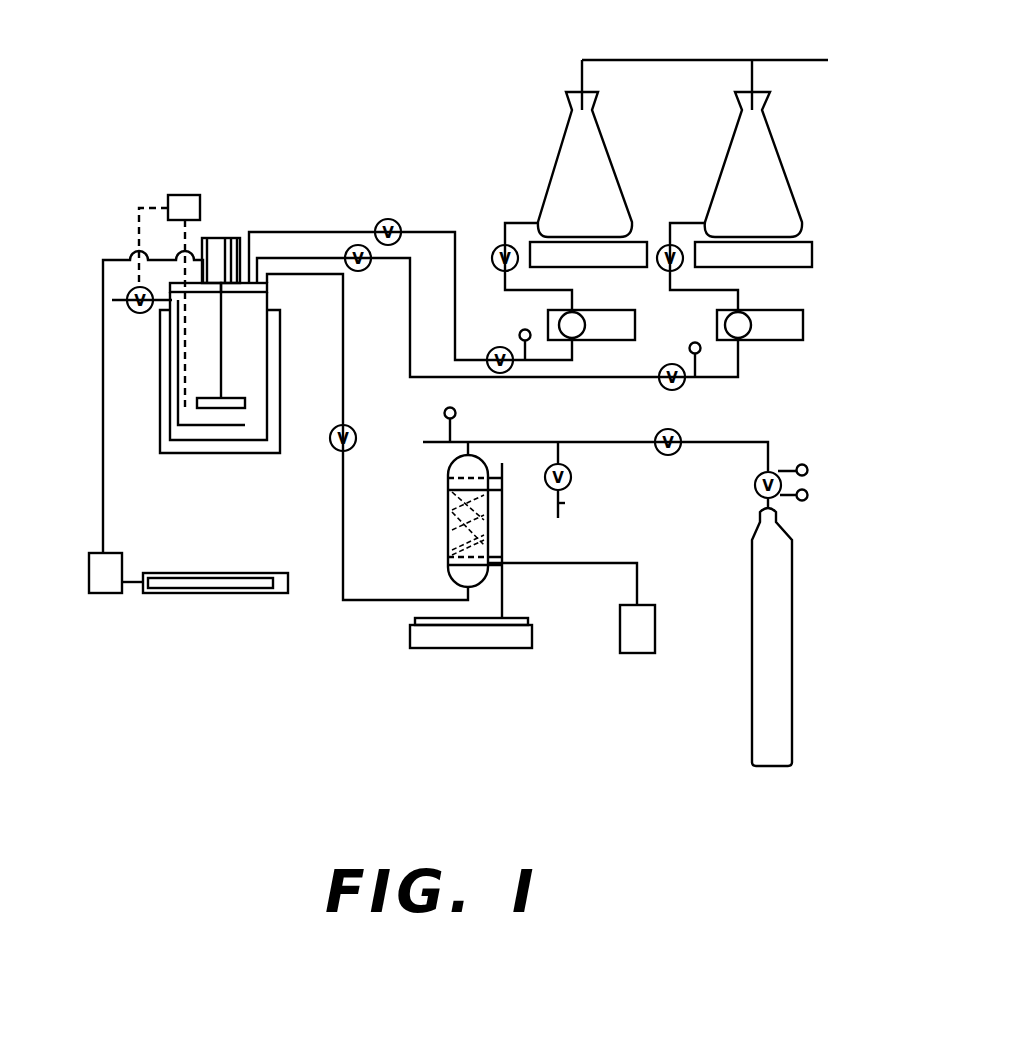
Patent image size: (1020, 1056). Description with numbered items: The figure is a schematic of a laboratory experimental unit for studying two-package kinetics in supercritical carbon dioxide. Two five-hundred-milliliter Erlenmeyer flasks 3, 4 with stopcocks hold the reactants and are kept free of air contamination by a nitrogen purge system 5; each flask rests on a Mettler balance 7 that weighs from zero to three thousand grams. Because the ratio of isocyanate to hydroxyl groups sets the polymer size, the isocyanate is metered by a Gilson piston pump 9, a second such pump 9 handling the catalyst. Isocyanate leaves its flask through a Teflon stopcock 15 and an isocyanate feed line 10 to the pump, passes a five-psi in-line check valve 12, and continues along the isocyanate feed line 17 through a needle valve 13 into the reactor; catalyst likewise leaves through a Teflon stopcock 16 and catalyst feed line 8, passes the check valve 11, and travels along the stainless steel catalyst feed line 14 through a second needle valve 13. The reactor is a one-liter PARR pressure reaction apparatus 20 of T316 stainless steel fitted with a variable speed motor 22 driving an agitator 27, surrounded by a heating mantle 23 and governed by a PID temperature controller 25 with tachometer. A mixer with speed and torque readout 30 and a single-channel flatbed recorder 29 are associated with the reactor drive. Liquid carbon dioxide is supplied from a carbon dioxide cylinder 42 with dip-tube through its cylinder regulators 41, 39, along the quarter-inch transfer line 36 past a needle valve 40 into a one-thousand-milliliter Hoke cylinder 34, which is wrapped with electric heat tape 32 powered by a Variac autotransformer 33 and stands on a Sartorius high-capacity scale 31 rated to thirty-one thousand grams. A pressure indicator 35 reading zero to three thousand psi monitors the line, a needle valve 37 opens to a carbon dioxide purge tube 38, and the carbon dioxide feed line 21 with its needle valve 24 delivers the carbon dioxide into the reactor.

The Erlenmeyer flask 3 is at (560, 165).
The Erlenmeyer flask 4 is at (775, 170).
The nitrogen purge system 5 is at (652, 60).
The balance 7 is at (640, 242).
The catalyst feed line 8 is at (740, 300).
The piston pump 9 is at (635, 320).
The isocyanate feed line 10 is at (560, 292).
The in-line check valve 11 is at (682, 387).
The in-line check valve 12 is at (500, 347).
The needle valve 13 is at (392, 219).
The catalyst feed line 14 is at (410, 345).
The Teflon stopcock 15 is at (500, 247).
The Teflon stopcock 16 is at (662, 272).
The isocyanate feed line 17 is at (430, 232).
The pressure reaction apparatus 20 is at (250, 338).
The carbon dioxide feed line 21 is at (343, 530).
The variable speed motor 22 is at (222, 238).
The heating mantle 23 is at (285, 375).
The needle valve 24 is at (357, 438).
The PID temperature controller 25 is at (182, 195).
The agitator 27 is at (245, 408).
The flatbed recorder 29 is at (273, 593).
The mixer with speed/torque readout 30 is at (103, 593).
The high-capacity scale 31 is at (462, 640).
The electric heat tape 32 is at (448, 533).
The Variac autotransformer 33 is at (655, 625).
The Hoke cylinder 34 is at (448, 470).
The pressure indicator 35 is at (456, 412).
The carbon dioxide transfer line 36 is at (518, 442).
The needle valve 37 is at (572, 477).
The carbon dioxide purge tube 38 is at (565, 503).
The carbon dioxide cylinder regulator 39 is at (808, 495).
The needle valve 40 is at (655, 436).
The carbon dioxide cylinder regulator 41 is at (755, 492).
The carbon dioxide cylinder 42 is at (792, 585).